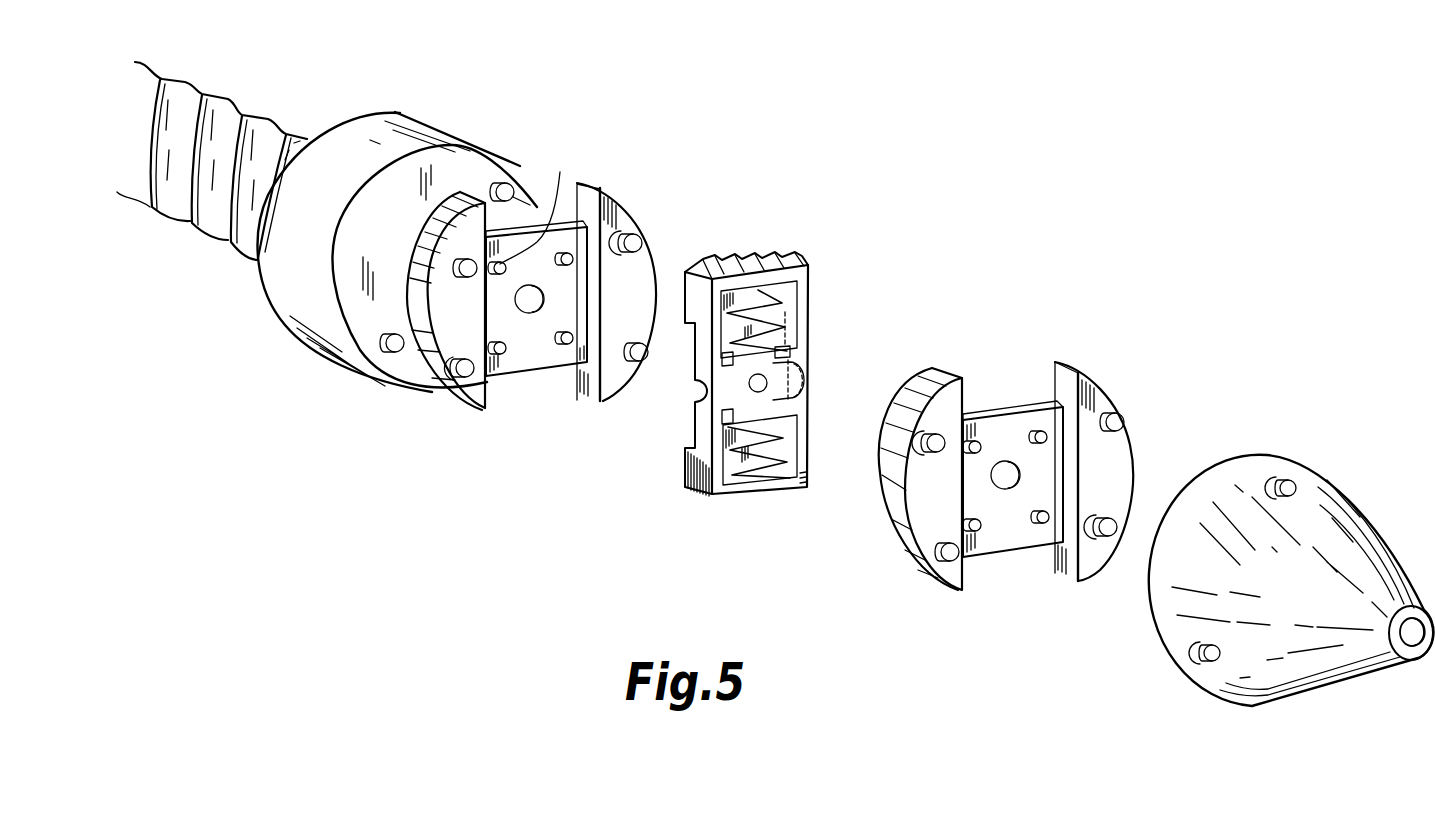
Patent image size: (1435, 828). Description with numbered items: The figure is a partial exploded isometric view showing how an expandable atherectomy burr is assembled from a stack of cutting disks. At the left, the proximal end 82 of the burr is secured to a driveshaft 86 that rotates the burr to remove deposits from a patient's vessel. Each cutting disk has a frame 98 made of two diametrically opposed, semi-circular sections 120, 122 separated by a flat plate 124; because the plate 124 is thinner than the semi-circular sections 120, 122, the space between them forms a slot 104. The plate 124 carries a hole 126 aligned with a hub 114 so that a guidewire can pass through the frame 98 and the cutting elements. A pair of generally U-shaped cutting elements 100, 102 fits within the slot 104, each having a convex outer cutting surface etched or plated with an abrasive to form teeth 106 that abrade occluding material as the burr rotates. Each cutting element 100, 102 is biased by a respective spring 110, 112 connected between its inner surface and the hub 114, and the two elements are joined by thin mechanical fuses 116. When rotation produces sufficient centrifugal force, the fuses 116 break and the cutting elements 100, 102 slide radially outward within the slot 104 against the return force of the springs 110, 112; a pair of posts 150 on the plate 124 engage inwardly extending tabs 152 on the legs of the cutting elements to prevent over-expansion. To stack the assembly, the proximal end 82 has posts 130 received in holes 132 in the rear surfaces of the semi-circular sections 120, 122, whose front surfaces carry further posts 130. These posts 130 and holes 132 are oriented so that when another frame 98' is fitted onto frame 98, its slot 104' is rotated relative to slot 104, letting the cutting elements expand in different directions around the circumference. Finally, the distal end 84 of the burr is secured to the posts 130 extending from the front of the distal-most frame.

The proximal end 82 is at (337, 360).
The distal end 84 is at (1331, 684).
The driveshaft 86 is at (168, 210).
The frame 98 is at (635, 278).
The another frame 98' is at (1130, 471).
The cutting element 100 is at (780, 388).
The cutting element 102 is at (750, 388).
The slot 104 is at (710, 323).
The slot 104' is at (971, 504).
The teeth 106 is at (731, 256).
The spring 110 is at (764, 296).
The spring 112 is at (736, 453).
The hub 114 is at (762, 389).
The mechanical fuses 116 is at (803, 383).
The semi-circular section 120 is at (648, 243).
The semi-circular section 122 is at (472, 408).
The flat plate 124 is at (551, 300).
The hole 126 is at (524, 313).
The posts 130 is at (500, 187).
The holes 132 is at (450, 388).
The posts 150 is at (500, 265).
The tabs 152 is at (793, 353).